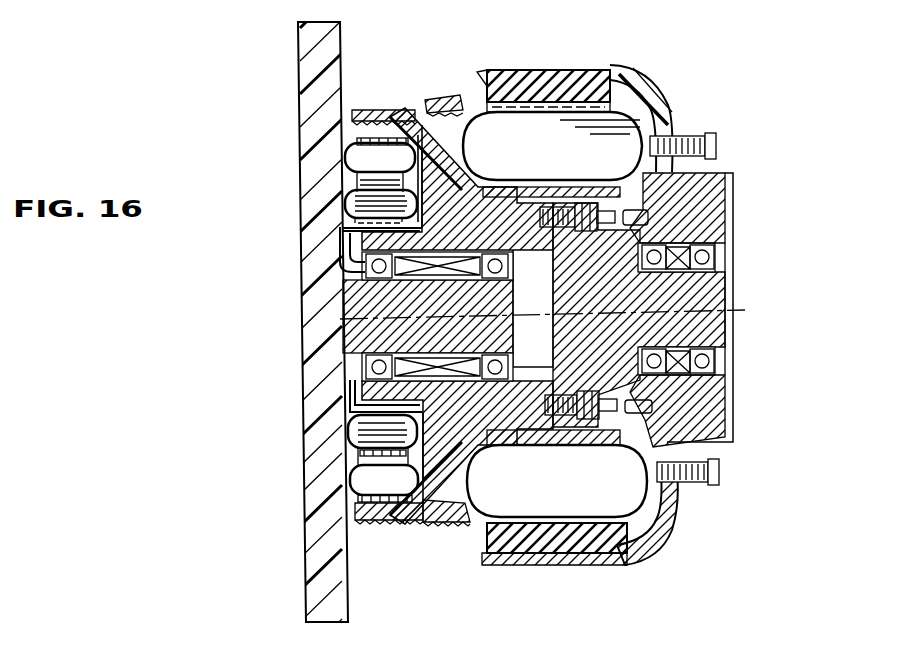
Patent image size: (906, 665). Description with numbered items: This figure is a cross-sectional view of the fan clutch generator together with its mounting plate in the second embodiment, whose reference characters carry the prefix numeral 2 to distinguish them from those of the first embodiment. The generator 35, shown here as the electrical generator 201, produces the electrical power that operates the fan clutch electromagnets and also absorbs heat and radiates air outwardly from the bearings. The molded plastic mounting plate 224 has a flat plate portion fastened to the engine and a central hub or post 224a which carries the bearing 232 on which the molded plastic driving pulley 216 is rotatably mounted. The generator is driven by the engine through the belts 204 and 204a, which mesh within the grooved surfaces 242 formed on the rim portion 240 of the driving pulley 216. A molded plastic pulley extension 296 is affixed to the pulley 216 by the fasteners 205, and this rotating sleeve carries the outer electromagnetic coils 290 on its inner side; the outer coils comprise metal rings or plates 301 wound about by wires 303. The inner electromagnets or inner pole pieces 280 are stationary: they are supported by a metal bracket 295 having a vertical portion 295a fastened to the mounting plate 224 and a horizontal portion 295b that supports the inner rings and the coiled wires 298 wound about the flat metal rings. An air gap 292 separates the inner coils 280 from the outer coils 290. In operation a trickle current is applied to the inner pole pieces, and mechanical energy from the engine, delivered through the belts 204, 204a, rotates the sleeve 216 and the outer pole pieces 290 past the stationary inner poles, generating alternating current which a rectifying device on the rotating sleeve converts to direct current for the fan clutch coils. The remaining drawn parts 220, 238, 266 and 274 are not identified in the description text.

The section line indicator 2 is at (230, 0).
The generator 35 is at (417, 538).
The electrical generator 201 is at (397, 97).
The belt 204 is at (370, 110).
The belt 204a is at (435, 100).
The fasteners 205 is at (655, 150).
The driving pulley 216 is at (440, 215).
The outer housing shell 220 is at (652, 89).
The mounting plate 224 is at (400, 285).
The central hub or post 224a is at (395, 345).
The bearing 232 is at (372, 264).
The air chamber cylinder 238 is at (538, 133).
The rim portion 240 is at (357, 140).
The grooved surfaces 242 is at (355, 112).
The hatched ring 266 is at (508, 68).
The bolt 274 is at (716, 143).
The inner coils 280 is at (355, 435).
The outer coils 290 is at (357, 504).
The air gap 292 is at (352, 470).
The stationary metal bracket 295 is at (357, 405).
The vertical portion 295a is at (348, 240).
The horizontal portion 295b is at (345, 226).
The pulley extension 296 is at (703, 293).
The coiled wires 298 is at (463, 167).
The metal rings or plates 301 is at (405, 390).
The wires 303 is at (467, 450).